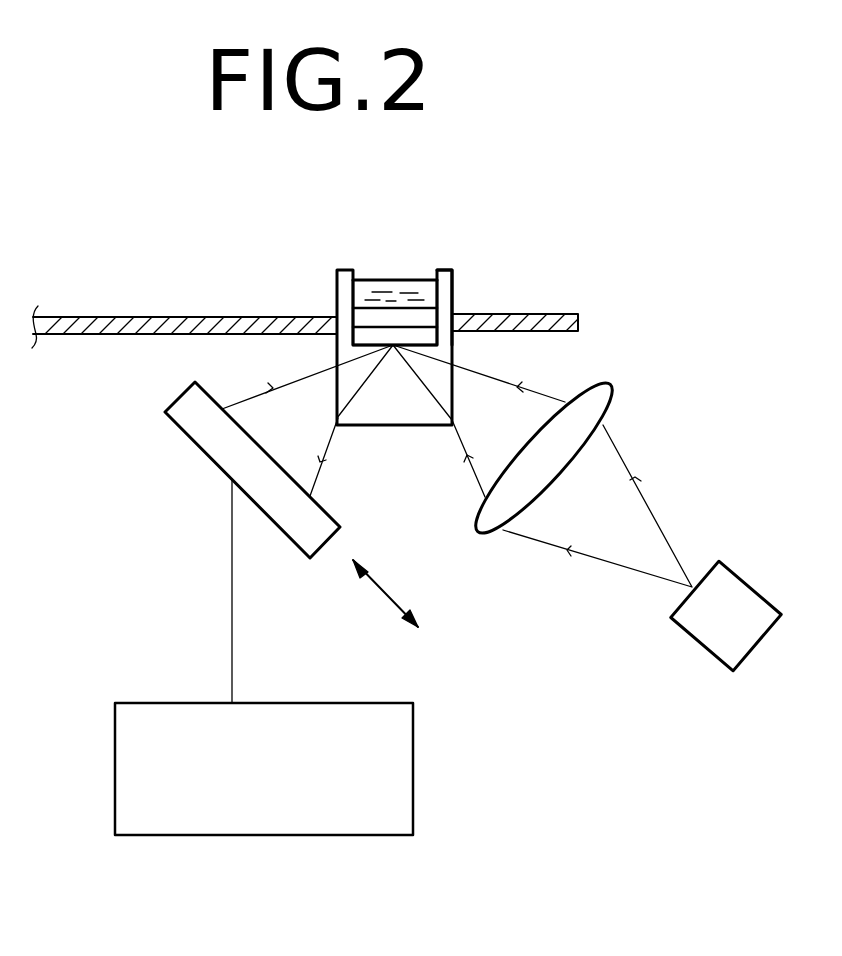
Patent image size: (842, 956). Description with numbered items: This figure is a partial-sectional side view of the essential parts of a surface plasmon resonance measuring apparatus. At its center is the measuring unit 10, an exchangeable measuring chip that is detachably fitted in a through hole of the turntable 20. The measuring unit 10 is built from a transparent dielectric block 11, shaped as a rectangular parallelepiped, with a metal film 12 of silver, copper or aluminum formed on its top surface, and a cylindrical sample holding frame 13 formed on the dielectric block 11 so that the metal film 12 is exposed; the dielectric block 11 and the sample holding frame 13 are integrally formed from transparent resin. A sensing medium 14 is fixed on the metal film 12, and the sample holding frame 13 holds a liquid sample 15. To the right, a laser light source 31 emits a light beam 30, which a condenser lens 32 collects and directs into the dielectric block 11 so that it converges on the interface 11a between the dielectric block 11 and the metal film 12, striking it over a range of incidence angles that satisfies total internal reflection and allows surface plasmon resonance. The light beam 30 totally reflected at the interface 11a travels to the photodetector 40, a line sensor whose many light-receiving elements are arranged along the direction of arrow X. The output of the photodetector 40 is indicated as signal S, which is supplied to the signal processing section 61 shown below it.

The measuring unit 10 is at (421, 294).
The transparent dielectric block 11 is at (458, 387).
The interface 11a is at (370, 343).
The metal film 12 is at (420, 337).
The sample holding frame 13 is at (442, 292).
The sensing medium 14 is at (412, 317).
The liquid sample 15 is at (388, 288).
The turntable 20 is at (132, 317).
The light beam 30 is at (663, 530).
The laser light source 31 is at (750, 602).
The condenser lens 32 is at (607, 402).
The photodetector 40 is at (207, 452).
The signal processing section 61 is at (413, 747).
The signal S is at (232, 628).
The direction of arrow X is at (383, 593).